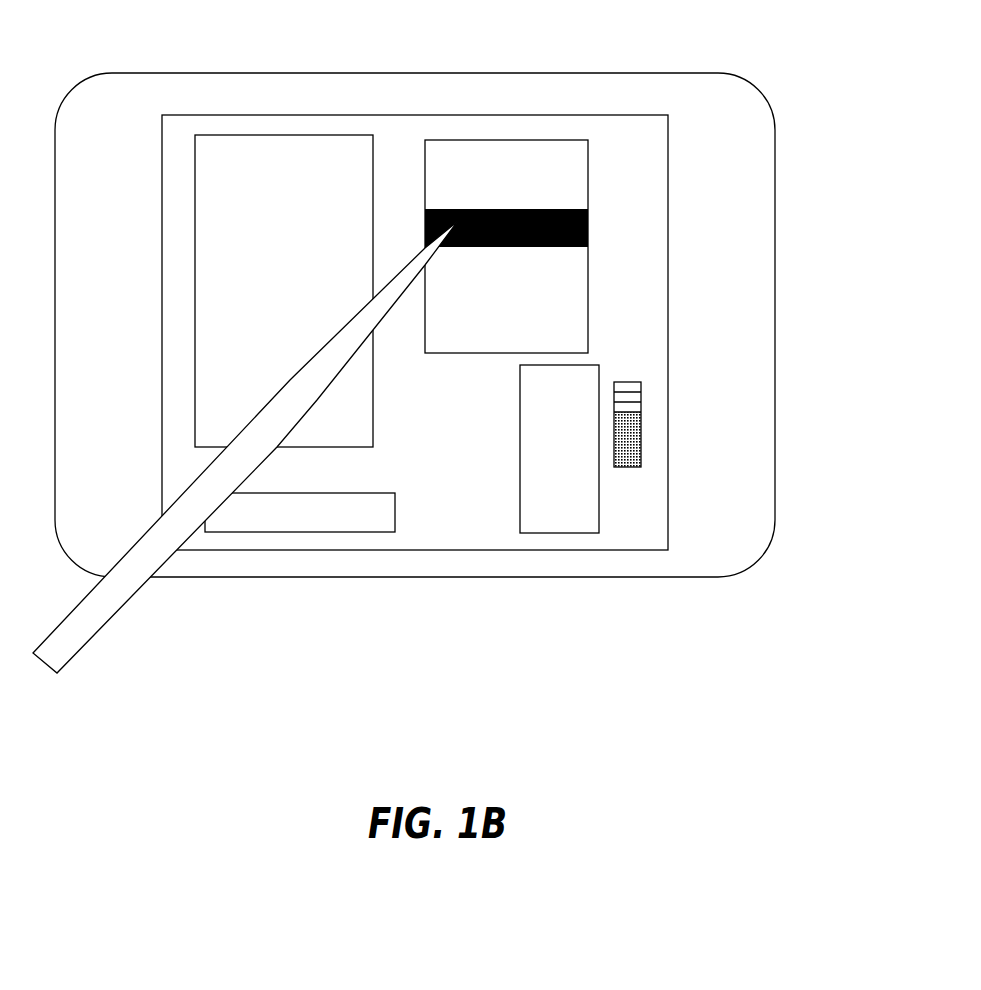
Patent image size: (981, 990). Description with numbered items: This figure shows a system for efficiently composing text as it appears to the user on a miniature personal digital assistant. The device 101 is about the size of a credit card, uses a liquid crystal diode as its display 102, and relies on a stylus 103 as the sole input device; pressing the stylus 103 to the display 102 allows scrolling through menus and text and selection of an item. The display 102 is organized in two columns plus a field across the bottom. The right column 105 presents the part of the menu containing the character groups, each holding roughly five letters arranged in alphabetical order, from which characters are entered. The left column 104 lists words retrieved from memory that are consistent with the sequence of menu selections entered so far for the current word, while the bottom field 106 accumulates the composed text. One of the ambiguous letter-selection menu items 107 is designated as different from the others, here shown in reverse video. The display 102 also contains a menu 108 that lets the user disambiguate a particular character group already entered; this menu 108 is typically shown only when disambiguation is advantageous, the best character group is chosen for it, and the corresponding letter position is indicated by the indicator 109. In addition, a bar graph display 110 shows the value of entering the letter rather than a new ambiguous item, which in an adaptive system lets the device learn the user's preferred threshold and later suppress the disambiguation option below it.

The device 101 is at (775, 425).
The display 102 is at (592, 550).
The stylus 103 is at (108, 615).
The left column 104 is at (307, 135).
The right column 105 is at (513, 140).
The text field 106 is at (268, 533).
The designated menu item 107 is at (572, 243).
The disambiguation menu 108 is at (599, 502).
The letter position indicator 109 is at (445, 493).
The bar graph display 110 is at (640, 457).